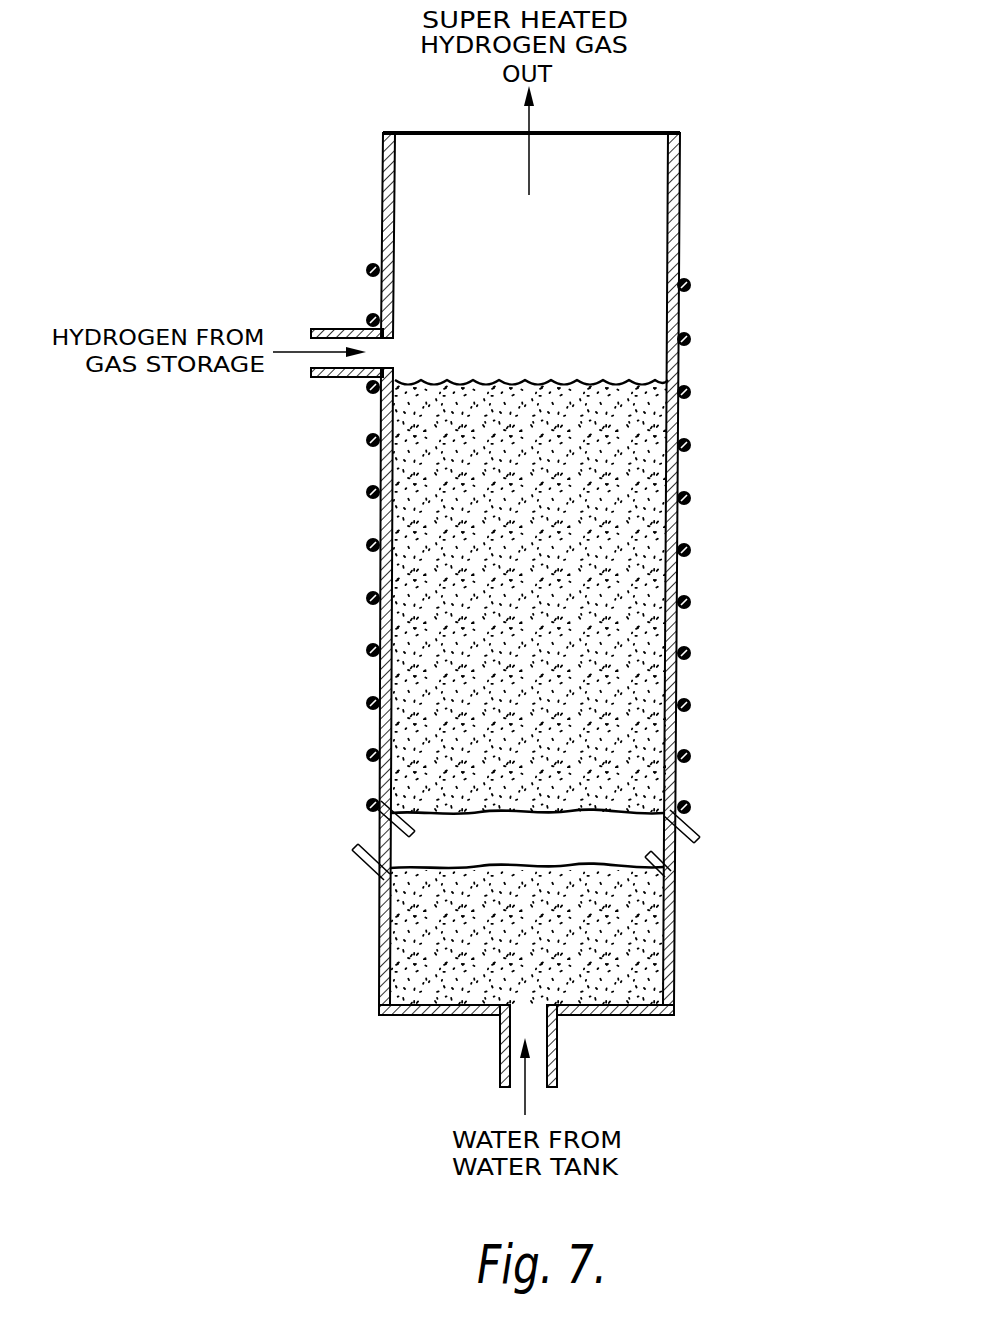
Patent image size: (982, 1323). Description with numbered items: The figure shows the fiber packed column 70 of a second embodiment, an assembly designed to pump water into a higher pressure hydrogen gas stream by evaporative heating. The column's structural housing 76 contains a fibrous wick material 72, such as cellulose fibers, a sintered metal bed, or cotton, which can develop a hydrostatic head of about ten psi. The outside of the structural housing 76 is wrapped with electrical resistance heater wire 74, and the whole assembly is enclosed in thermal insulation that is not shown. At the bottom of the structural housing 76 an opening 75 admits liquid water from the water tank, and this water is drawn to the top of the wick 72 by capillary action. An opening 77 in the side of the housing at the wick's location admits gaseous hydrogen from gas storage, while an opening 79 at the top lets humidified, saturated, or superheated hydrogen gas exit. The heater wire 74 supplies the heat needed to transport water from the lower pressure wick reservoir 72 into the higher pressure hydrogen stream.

The fiber packed column 70 is at (712, 114).
The fibrous wick material 72 is at (435, 575).
The electrical resistance heater wire 74 is at (690, 706).
The opening 75 is at (557, 1067).
The structural housing 76 is at (678, 425).
The opening 77 is at (383, 331).
The opening 79 is at (423, 132).